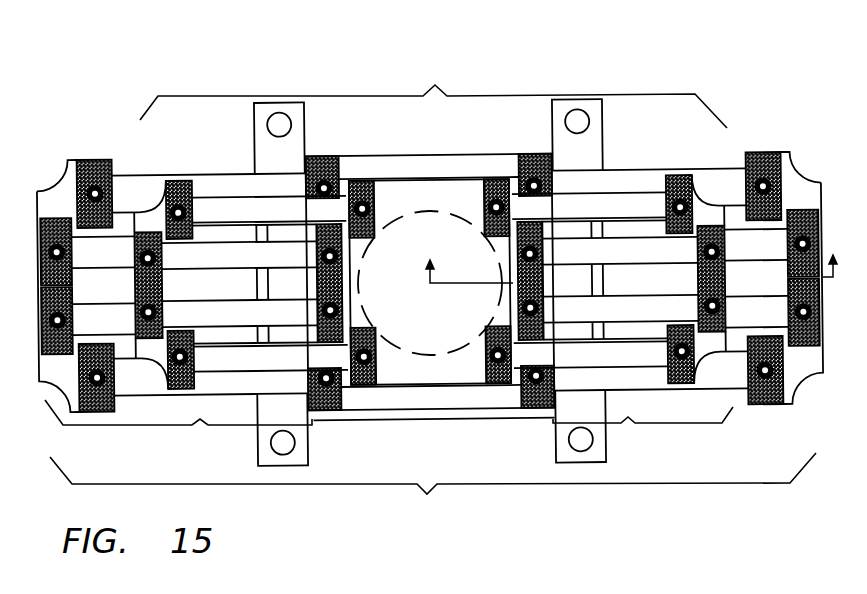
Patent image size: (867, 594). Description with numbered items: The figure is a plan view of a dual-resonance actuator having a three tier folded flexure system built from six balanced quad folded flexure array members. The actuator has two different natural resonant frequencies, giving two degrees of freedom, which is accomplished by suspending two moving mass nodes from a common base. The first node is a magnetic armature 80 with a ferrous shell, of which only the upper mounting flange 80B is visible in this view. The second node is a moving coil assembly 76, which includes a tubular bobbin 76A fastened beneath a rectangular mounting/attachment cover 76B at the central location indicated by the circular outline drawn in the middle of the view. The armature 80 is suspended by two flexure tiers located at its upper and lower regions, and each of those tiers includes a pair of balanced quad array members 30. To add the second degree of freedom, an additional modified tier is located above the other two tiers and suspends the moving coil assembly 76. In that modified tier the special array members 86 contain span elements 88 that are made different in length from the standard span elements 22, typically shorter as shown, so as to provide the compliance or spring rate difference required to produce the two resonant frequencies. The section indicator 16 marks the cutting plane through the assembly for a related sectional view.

The balanced quad array member 30 is at (178, 432).
The special array member 86 is at (643, 432).
The magnetic armature 80 is at (395, 151).
The upper mounting flange 80B is at (503, 166).
The span element 88 is at (273, 357).
The standard span element 22 is at (136, 383).
The section line 16 is at (635, 256).
The moving coil assembly 76 is at (422, 395).
The tubular bobbin 76A is at (470, 343).
The rectangular mounting/attachment cover 76B is at (430, 283).